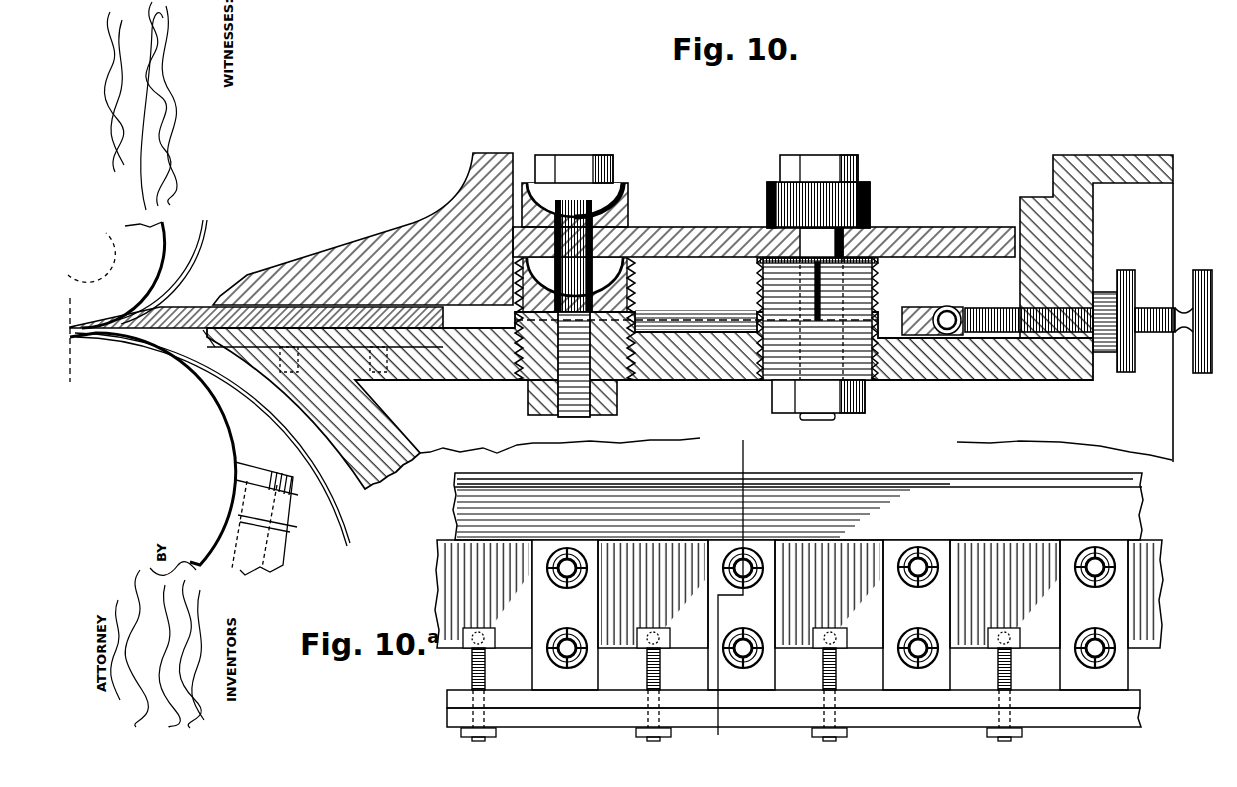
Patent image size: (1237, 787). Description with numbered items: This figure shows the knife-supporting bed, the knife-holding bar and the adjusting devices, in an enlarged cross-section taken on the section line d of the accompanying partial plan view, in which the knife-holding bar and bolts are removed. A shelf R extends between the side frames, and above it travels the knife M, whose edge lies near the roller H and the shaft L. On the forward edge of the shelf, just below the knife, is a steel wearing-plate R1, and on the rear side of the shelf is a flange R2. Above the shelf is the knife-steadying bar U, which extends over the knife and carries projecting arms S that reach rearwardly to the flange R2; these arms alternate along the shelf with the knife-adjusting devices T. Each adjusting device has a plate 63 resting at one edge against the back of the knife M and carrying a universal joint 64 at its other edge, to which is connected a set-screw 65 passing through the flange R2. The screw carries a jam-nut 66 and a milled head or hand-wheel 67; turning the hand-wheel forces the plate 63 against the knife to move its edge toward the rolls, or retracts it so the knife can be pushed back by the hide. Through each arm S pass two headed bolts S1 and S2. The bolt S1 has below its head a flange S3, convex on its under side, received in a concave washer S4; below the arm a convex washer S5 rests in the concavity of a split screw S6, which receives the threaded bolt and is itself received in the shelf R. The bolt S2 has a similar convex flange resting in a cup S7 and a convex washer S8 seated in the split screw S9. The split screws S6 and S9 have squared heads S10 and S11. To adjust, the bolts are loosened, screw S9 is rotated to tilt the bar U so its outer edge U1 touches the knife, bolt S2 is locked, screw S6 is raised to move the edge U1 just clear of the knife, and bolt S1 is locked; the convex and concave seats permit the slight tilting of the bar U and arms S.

In FIG. 10, the roller H is at (116, 302).
In FIG. 10, the knife M is at (162, 272).
In FIG. 10, the shaft L is at (210, 449).
In FIG. 10, the knife-steadying bar U is at (340, 270).
In FIG. 10A, the knife-steadying bar U is at (728, 513).
In FIG. 10, the outer edge of bar U1 is at (224, 300).
In FIG. 10A, the outer edge of bar U1 is at (1000, 478).
In FIG. 10, the shelf R is at (450, 380).
In FIG. 10, the steel wearing-plate R1 is at (214, 347).
In FIG. 10, the flange R2 is at (1094, 210).
In FIG. 10A, the flange R2 is at (1141, 708).
In FIG. 10, the projecting arms S is at (704, 228).
In FIG. 10A, the projecting arms S is at (830, 615).
In FIG. 10, the headed bolt S1 is at (575, 418).
In FIG. 10, the headed bolt S2 is at (818, 421).
In FIG. 10, the convex flange S3 is at (613, 182).
In FIG. 10, the concave washer S4 is at (629, 208).
In FIG. 10, the convex washer S5 is at (630, 266).
In FIG. 10, the split screw S6 is at (636, 296).
In FIG. 10A, the split screw S6 is at (556, 586).
In FIG. 10, the cup S7 is at (870, 210).
In FIG. 10, the convex washer S8 is at (878, 262).
In FIG. 10, the split screw S9 is at (757, 299).
In FIG. 10A, the split screw S9 is at (556, 660).
In FIG. 10, the squared head S10 is at (618, 404).
In FIG. 10, the squared head S11 is at (865, 406).
In FIG. 10, the knife-adjusting devices T is at (912, 305).
In FIG. 10A, the knife-adjusting devices T is at (653, 594).
In FIG. 10A, the plate 63 is at (483, 594).
In FIG. 10, the universal joint 64 is at (953, 308).
In FIG. 10A, the universal joint 64 is at (488, 650).
In FIG. 10, the set-screw 65 is at (1148, 306).
In FIG. 10A, the set-screw 65 is at (486, 690).
In FIG. 10, the jam-nut 66 is at (1127, 373).
In FIG. 10, the milled head or hand-wheel 67 is at (1202, 270).
In FIG. 10A, the section line d is at (740, 594).